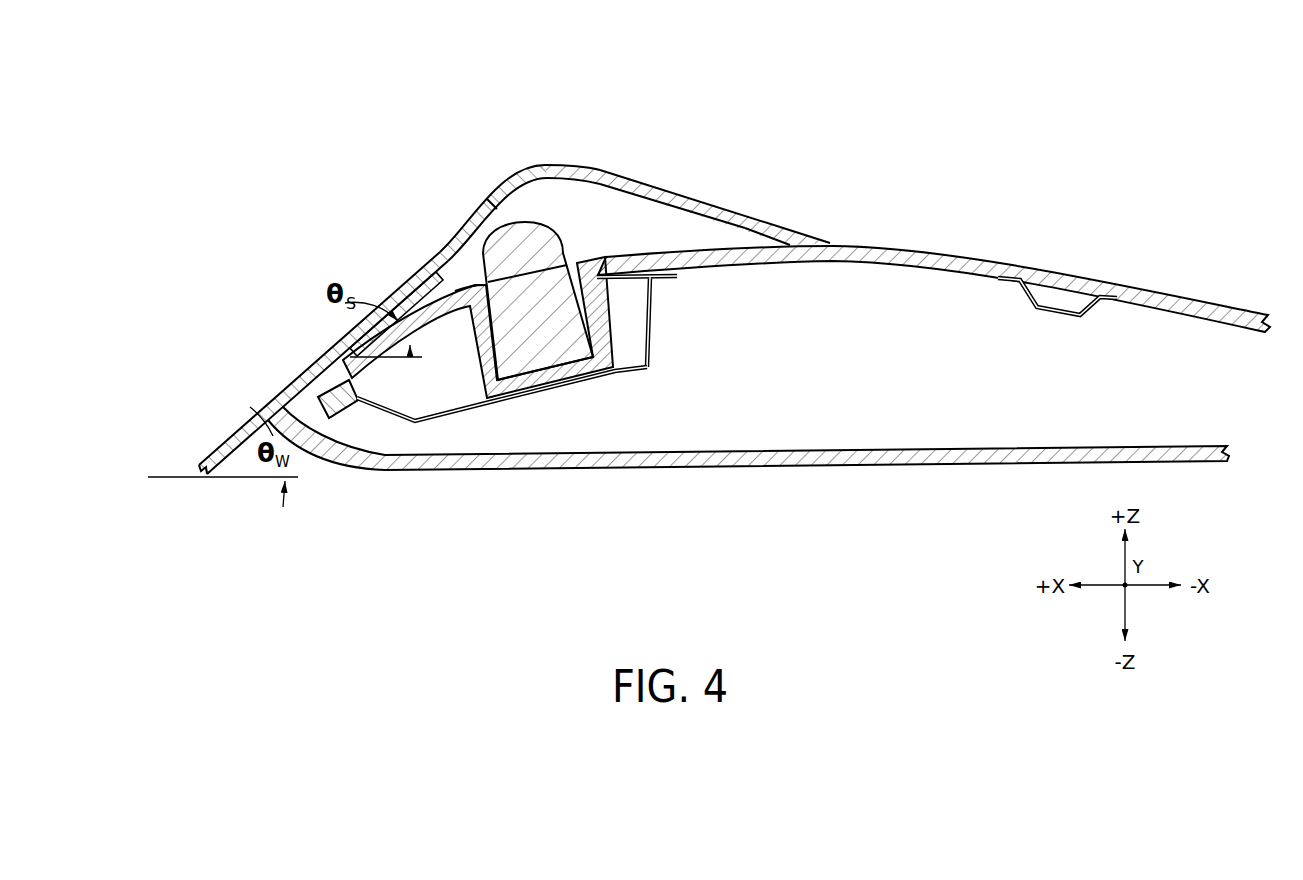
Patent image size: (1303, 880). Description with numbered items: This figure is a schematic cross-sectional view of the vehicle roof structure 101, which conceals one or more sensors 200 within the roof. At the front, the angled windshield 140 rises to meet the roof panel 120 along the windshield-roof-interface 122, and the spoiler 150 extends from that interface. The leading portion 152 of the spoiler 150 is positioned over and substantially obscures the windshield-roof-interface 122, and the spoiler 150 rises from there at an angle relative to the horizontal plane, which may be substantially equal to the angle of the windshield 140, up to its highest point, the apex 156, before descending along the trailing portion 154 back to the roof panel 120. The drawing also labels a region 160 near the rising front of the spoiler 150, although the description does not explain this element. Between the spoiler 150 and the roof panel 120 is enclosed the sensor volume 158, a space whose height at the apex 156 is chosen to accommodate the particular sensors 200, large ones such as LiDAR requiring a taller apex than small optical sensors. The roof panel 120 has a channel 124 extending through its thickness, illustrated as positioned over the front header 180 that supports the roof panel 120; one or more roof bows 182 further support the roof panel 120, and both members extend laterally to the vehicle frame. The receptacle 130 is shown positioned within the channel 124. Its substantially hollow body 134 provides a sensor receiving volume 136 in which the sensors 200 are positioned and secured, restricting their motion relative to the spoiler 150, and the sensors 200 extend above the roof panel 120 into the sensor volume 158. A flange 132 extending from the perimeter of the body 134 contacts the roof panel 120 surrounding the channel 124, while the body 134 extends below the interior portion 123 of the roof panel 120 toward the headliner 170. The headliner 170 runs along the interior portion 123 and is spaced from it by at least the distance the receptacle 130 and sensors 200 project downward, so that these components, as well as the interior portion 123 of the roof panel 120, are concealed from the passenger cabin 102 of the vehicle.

The vehicle roof structure 101 is at (660, 143).
The passenger cabin 102 is at (990, 490).
The roof panel 120 is at (1102, 260).
The windshield-roof-interface 122 is at (340, 370).
The interior portion 123 is at (953, 273).
The channel 124 is at (604, 286).
The receptacle 130 is at (498, 407).
The flange 132 is at (430, 290).
The body 134 is at (483, 373).
The sensor receiving volume 136 is at (474, 283).
The windshield 140 is at (195, 460).
The spoiler 150 is at (745, 143).
The leading portion 152 is at (300, 382).
The trailing portion 154 is at (808, 238).
The apex 156 is at (540, 164).
The sensor volume 158 is at (598, 178).
The nose portion 160 is at (397, 205).
The headliner 170 is at (610, 471).
The front header 180 is at (649, 369).
The roof bow 182 is at (1073, 320).
The sensor 200 is at (568, 236).